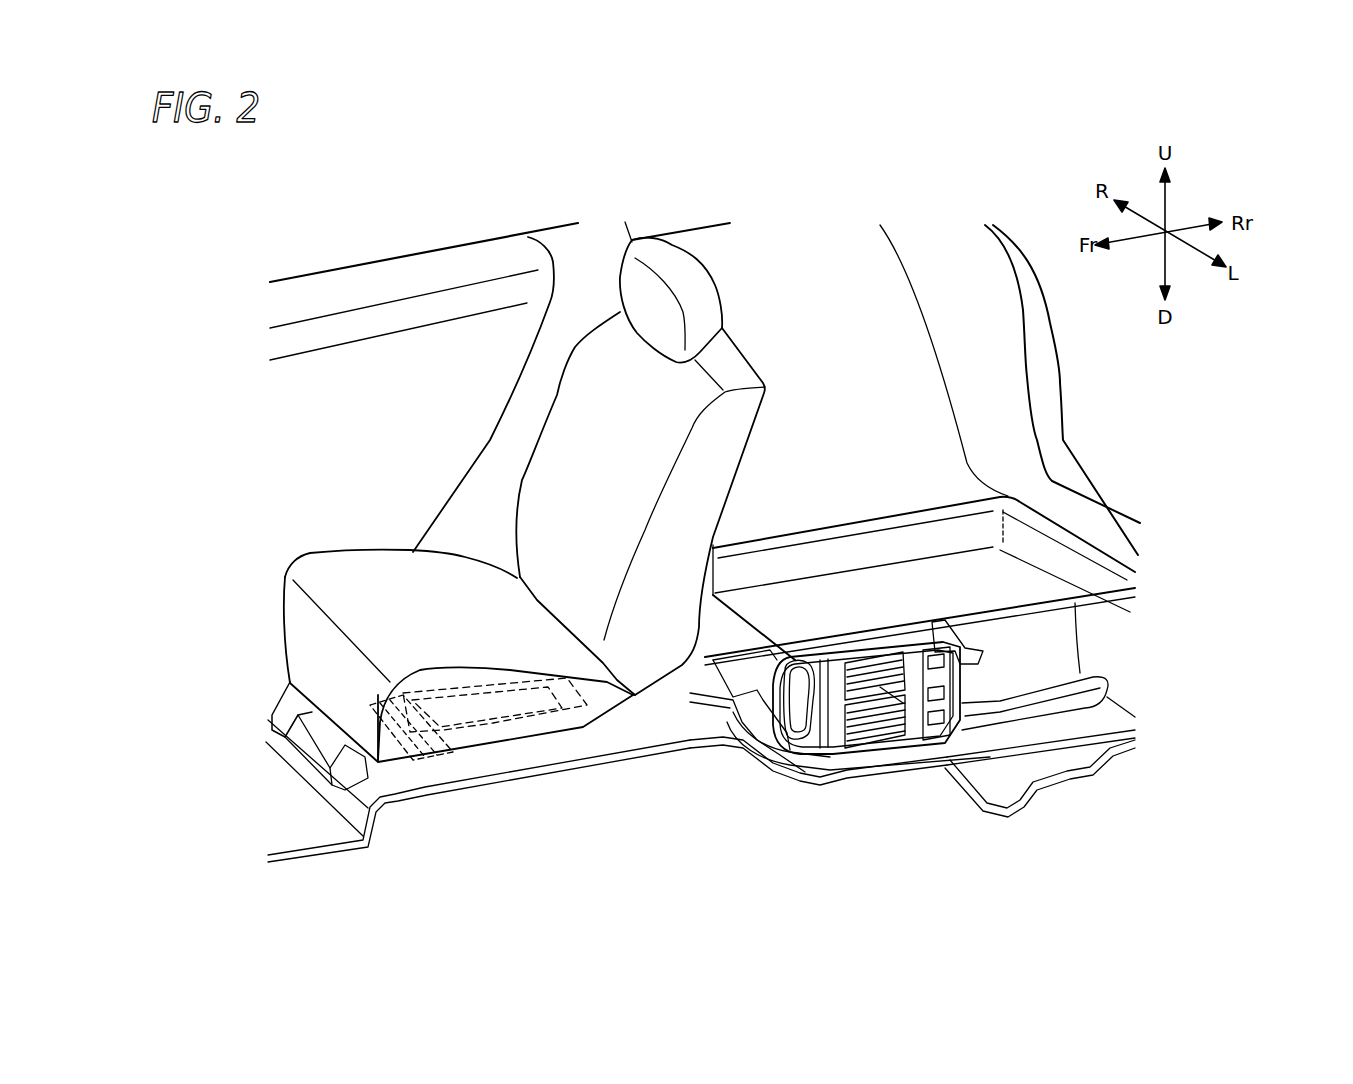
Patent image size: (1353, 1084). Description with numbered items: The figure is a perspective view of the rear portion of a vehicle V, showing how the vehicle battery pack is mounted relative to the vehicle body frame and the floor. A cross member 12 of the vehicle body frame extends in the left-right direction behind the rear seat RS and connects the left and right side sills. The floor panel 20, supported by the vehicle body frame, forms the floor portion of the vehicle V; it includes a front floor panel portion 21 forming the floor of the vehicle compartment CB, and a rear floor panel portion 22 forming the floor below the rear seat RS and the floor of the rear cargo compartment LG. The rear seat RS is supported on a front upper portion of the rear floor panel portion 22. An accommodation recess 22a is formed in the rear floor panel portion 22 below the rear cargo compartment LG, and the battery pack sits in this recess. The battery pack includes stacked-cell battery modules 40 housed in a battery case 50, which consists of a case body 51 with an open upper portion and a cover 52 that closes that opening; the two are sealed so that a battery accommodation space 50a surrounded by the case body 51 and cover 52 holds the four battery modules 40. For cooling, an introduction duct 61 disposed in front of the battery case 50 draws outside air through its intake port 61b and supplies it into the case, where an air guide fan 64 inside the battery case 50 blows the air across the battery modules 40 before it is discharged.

The vehicle V is at (272, 265).
The vehicle compartment CB is at (420, 260).
The rear seat RS is at (590, 378).
The rear cargo compartment LG is at (818, 298).
The cross member 12 is at (720, 742).
The floor panel 20 is at (700, 775).
The front floor panel portion 21 is at (557, 768).
The rear floor panel portion 22 is at (931, 780).
The accommodation recess 22a is at (760, 757).
The battery module 40 is at (869, 748).
The battery case 50 is at (973, 661).
The battery accommodation space 50a is at (814, 760).
The case body 51 is at (980, 745).
The cover 52 is at (963, 650).
The introduction duct 61 is at (478, 794).
The intake port 61b is at (415, 755).
The air guide fan 64 is at (935, 748).